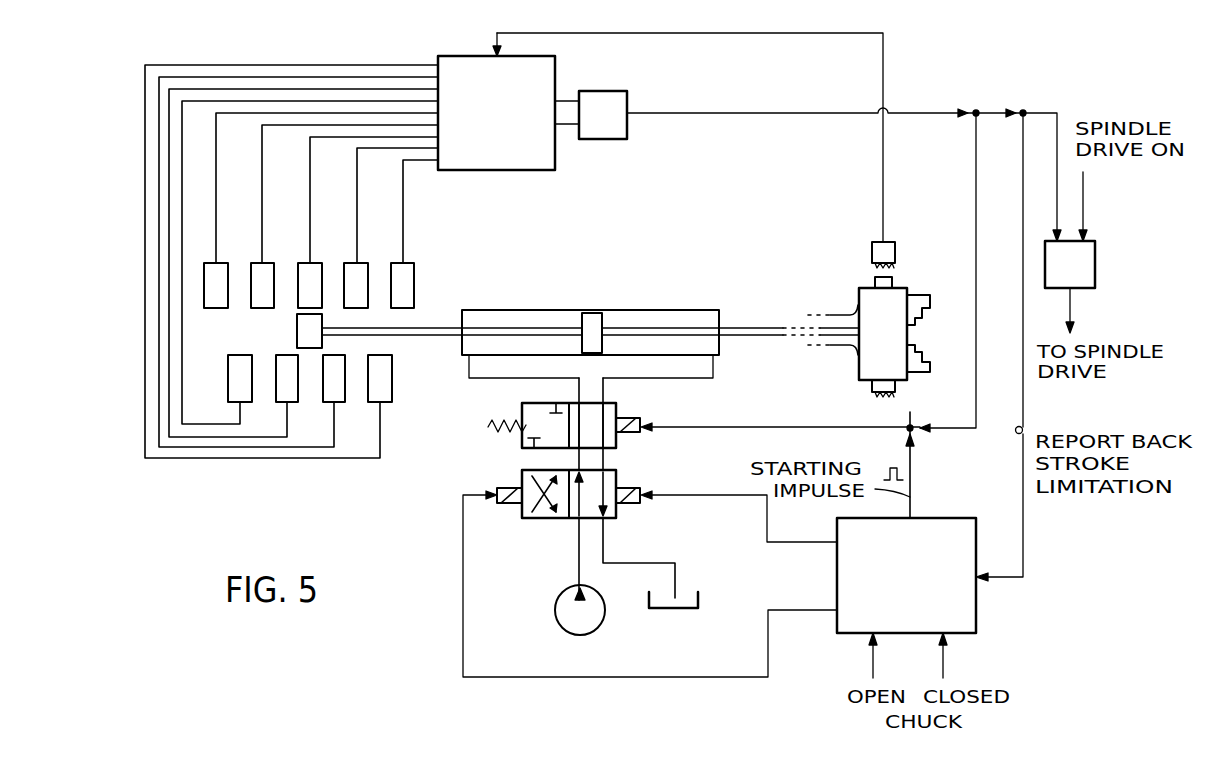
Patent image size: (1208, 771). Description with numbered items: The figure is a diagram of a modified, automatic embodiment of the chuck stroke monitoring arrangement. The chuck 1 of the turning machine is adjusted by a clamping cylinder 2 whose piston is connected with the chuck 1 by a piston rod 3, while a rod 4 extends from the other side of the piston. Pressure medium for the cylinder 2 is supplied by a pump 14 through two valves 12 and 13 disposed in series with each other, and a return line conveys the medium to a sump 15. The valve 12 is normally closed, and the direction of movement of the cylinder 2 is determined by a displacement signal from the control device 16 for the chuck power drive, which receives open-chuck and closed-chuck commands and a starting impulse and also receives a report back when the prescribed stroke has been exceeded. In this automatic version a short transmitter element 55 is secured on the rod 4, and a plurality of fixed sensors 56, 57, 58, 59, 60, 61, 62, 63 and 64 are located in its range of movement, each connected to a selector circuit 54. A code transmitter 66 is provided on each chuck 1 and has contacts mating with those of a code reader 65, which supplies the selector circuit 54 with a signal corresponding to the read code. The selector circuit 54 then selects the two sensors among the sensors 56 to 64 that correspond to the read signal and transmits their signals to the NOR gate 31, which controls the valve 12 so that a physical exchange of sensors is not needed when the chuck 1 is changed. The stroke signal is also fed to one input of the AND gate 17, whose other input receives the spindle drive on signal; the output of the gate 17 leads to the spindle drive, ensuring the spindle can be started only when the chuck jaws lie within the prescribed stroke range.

The chuck 1 is at (897, 372).
The clamping cylinder 2 is at (660, 310).
The piston rod 3 is at (759, 335).
The rod 4 is at (424, 340).
The valve 12 is at (520, 403).
The valve 13 is at (540, 519).
The pump 14 is at (556, 620).
The sump 15 is at (698, 603).
The control device 16 is at (977, 618).
The AND gate 17 is at (1096, 256).
The NOR gate 31 is at (612, 140).
The selector circuit 54 is at (557, 68).
The transmitter element 55 is at (297, 335).
The sensor 56 is at (224, 262).
The sensor 57 is at (271, 262).
The sensor 58 is at (318, 262).
The sensor 59 is at (364, 262).
The sensor 60 is at (411, 262).
The sensor 61 is at (250, 403).
The sensor 62 is at (297, 403).
The sensor 63 is at (344, 403).
The sensor 64 is at (391, 403).
The code reader 65 is at (895, 252).
The code transmitter 66 is at (893, 283).